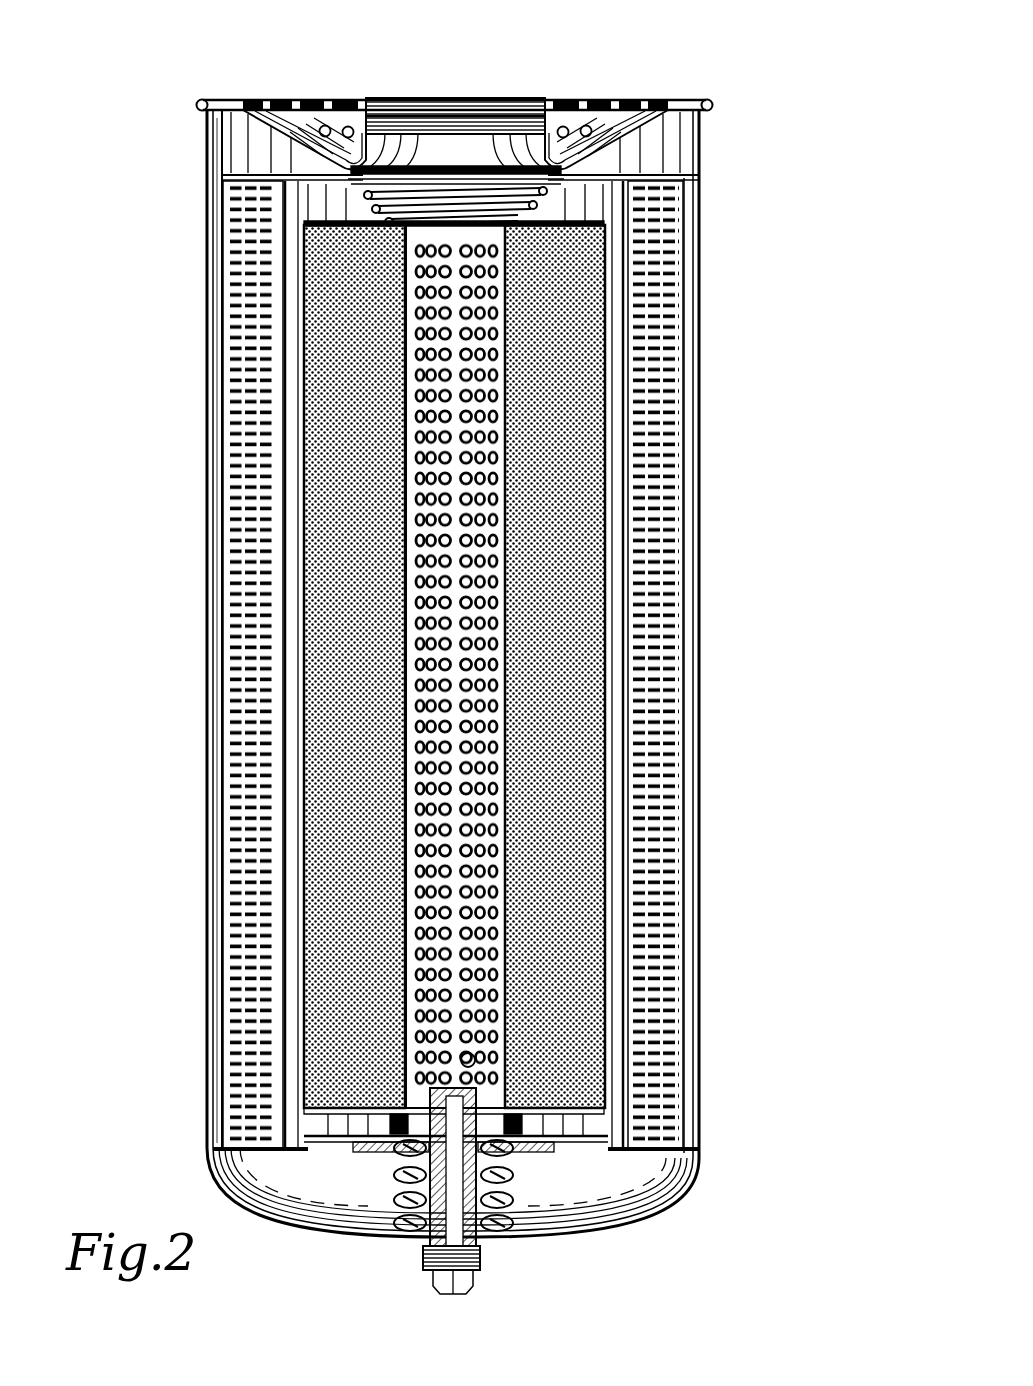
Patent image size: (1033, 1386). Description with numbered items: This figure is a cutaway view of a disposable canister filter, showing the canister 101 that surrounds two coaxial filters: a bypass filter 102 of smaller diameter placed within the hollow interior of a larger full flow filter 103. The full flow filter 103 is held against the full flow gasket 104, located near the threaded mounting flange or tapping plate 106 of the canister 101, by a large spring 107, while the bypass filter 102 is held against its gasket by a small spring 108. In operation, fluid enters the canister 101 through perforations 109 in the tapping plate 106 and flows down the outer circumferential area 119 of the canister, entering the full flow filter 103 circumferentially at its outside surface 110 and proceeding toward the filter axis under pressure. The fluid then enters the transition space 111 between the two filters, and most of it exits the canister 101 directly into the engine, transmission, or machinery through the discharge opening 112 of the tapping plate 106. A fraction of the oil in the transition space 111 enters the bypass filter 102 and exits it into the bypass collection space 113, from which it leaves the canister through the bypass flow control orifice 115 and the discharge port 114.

The canister 101 is at (703, 326).
The bypass filter 102 is at (345, 405).
The full flow filter 103 is at (245, 512).
The full flow gasket 104 is at (600, 168).
The tapping plate 106 is at (568, 74).
The large spring 107 is at (505, 1168).
The small spring 108 is at (575, 205).
The perforations 109 is at (340, 116).
The outside surface of the full flow filter 110 is at (678, 616).
The transition space 111 is at (292, 452).
The discharge opening 112 is at (443, 92).
The bypass collection space 113 is at (454, 872).
The discharge port 114 is at (474, 1250).
The bypass flow control orifice 115 is at (468, 1052).
The outer circumferential area 119 is at (210, 340).